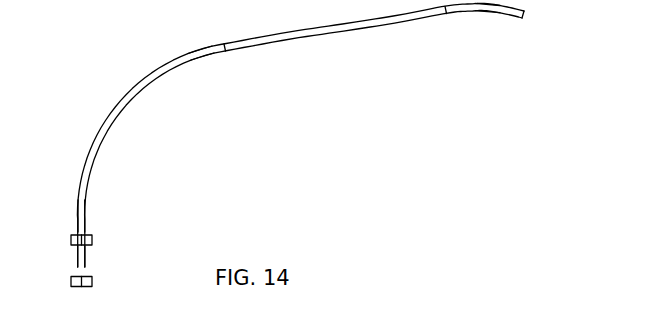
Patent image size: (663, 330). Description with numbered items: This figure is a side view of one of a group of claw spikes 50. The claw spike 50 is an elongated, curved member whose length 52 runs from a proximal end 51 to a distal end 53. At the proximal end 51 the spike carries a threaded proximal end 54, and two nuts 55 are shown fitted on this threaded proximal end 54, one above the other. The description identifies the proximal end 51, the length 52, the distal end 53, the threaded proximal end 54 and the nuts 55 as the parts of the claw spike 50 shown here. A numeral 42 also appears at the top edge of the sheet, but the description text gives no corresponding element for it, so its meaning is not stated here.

The housing 42 is at (90, 6).
The claw spike 50 is at (112, 127).
The proximal end 51 is at (88, 212).
The length 52 is at (203, 61).
The distal end 53 is at (488, 13).
The threaded proximal end 54 is at (70, 256).
The nuts 55 is at (100, 239).